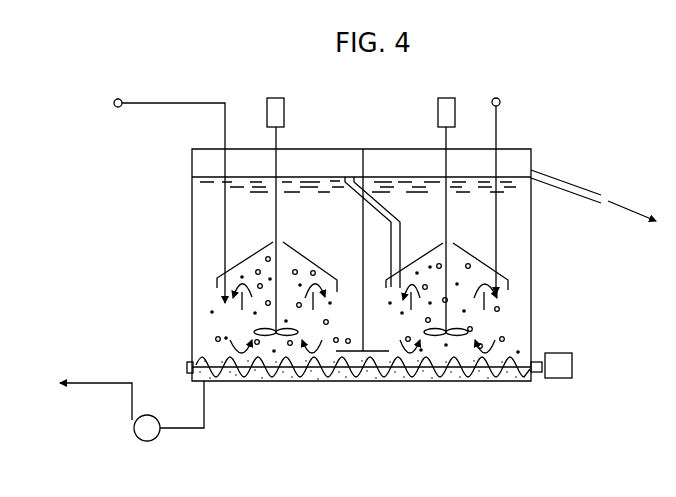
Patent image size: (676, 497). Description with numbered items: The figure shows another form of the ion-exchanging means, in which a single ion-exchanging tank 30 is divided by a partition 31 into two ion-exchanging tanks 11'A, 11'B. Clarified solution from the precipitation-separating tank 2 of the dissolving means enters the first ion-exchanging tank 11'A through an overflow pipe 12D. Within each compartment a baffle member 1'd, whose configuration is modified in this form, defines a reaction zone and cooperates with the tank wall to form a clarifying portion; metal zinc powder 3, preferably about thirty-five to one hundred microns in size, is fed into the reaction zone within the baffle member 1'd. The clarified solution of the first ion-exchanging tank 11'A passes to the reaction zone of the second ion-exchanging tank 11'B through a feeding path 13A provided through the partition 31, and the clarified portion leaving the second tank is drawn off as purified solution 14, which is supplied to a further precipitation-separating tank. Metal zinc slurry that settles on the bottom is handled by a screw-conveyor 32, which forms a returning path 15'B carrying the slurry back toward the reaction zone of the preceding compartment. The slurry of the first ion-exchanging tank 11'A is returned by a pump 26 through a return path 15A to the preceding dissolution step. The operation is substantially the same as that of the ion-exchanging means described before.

The precipitation-separating tank 2 is at (108, 105).
The overflow pipe 12D is at (163, 103).
The metal zinc powder 3 is at (493, 183).
The purified solution 14 is at (630, 214).
The ion-exchanging tank 30 is at (548, 252).
The baffle member 1'd is at (362, 254).
The feeding path 13A is at (400, 247).
The partition 31 is at (361, 242).
The first ion-exchanging tank 11'A is at (245, 225).
The second ion-exchanging tank 11'B is at (491, 226).
The returning path 15'B is at (361, 389).
The screw-conveyor 32 is at (447, 372).
The pump 26 is at (142, 441).
The return path 15A is at (191, 430).